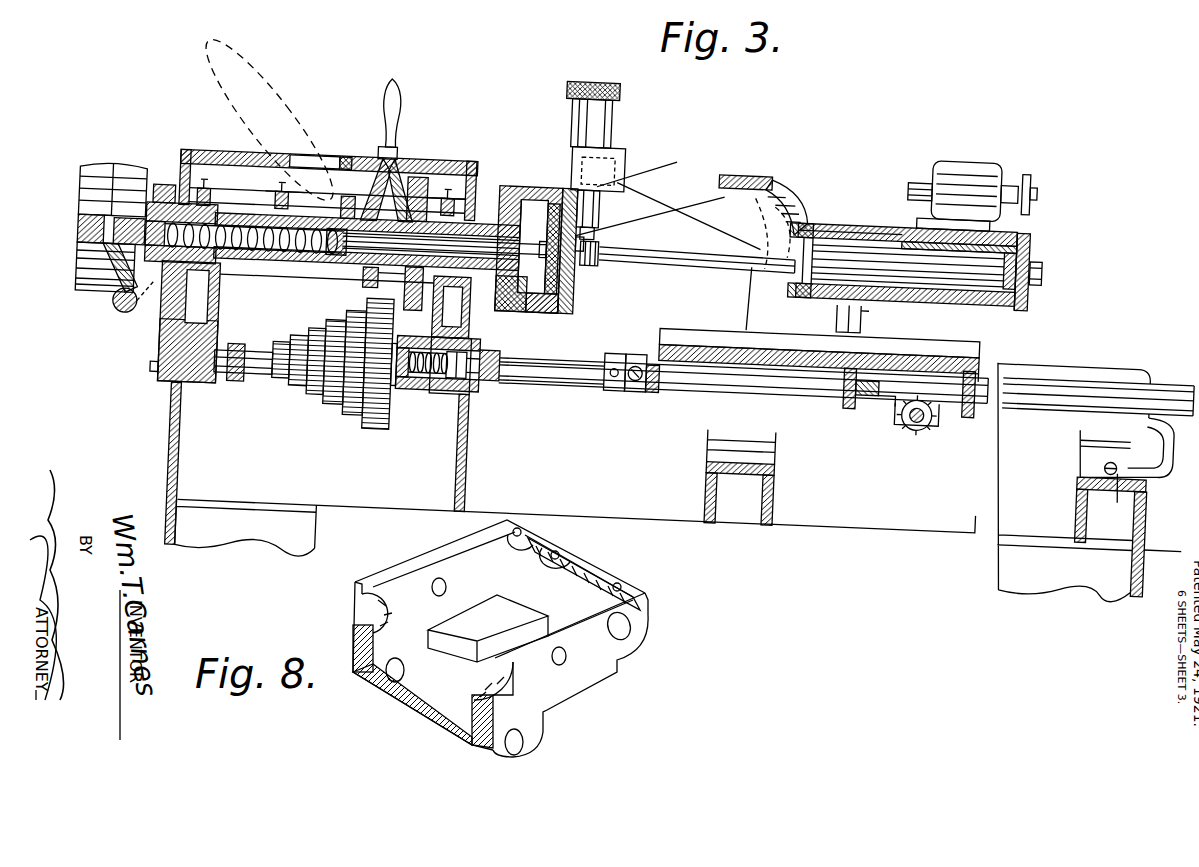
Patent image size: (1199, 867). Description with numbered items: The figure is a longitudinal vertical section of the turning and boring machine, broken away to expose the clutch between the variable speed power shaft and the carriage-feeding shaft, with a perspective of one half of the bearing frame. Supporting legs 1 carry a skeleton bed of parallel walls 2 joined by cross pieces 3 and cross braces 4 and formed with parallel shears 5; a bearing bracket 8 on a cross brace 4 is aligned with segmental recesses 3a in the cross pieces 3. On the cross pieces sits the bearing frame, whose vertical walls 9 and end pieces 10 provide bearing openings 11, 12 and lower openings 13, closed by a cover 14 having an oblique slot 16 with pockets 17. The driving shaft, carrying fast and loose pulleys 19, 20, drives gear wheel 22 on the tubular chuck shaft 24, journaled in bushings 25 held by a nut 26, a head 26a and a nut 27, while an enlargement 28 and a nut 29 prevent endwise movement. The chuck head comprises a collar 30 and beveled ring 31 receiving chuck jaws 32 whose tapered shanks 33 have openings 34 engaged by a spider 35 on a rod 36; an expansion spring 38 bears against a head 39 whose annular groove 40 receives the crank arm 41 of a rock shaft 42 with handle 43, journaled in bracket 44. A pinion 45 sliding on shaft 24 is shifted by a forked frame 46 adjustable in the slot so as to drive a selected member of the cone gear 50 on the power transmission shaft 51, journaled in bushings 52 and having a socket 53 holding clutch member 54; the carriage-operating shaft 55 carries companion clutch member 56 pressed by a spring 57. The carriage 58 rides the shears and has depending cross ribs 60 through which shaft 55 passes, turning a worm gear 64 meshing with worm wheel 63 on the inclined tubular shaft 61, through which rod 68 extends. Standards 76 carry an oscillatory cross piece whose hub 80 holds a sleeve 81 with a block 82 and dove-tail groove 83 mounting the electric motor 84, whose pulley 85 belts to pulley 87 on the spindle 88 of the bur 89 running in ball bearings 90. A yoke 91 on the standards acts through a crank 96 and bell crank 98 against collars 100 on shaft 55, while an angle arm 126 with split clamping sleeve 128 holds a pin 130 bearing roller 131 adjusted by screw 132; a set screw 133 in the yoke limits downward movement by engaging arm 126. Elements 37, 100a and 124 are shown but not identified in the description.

In FIG. 3, the supporting legs 1 is at (184, 541).
In FIG. 3, the parallel walls 2 is at (578, 486).
In FIG. 3, the cross pieces 3 is at (174, 486).
In FIG. 3, the segmental recesses 3a is at (186, 400).
In FIG. 3, the cross braces 4 is at (742, 468).
In FIG. 3, the parallel shears 5 is at (1126, 351).
In FIG. 3, the bearing bracket 8 is at (1164, 405).
In FIG. 3, the vertical walls 9 is at (160, 350).
In FIG. 8, the vertical walls 9 is at (398, 568).
In FIG. 3, the end pieces 10 is at (332, 292).
In FIG. 8, the end pieces 10 is at (572, 565).
In FIG. 3, the bearing openings 11 is at (205, 210).
In FIG. 8, the bearing openings 11 is at (358, 612).
In FIG. 8, the bearing openings 12 is at (567, 660).
In FIG. 8, the bearing openings 13 is at (390, 680).
In FIG. 3, the cover 14 is at (206, 172).
In FIG. 3, the oblique slot 16 is at (302, 172).
In FIG. 3, the pockets 17 is at (341, 172).
In FIG. 3, the fast pulley 19 is at (78, 200).
In FIG. 3, the loose pulley 20 is at (116, 192).
In FIG. 3, the gear wheel 22 is at (412, 185).
In FIG. 3, the tubular chuck shaft 24 is at (308, 247).
In FIG. 3, the bushings 25 is at (476, 229).
In FIG. 3, the nut 26 is at (432, 205).
In FIG. 3, the head 26a is at (264, 205).
In FIG. 3, the nut 27 is at (164, 203).
In FIG. 3, the enlargement 28 is at (500, 190).
In FIG. 3, the nut 29 is at (142, 221).
In FIG. 3, the collar 30 is at (516, 203).
In FIG. 3, the ring 31 is at (549, 206).
In FIG. 3, the chuck jaws 32 is at (572, 300).
In FIG. 3, the shanks 33 is at (518, 315).
In FIG. 3, the openings 34 is at (554, 315).
In FIG. 3, the spider 35 is at (578, 240).
In FIG. 3, the rod 36 is at (366, 229).
In FIG. 3, the spring 37 is at (284, 264).
In FIG. 3, the coiled expansion spring 38 is at (332, 266).
In FIG. 3, the head 39 is at (80, 246).
In FIG. 3, the annular groove 40 is at (110, 270).
In FIG. 3, the crank arm 41 is at (90, 318).
In FIG. 3, the rock shaft 42 is at (116, 330).
In FIG. 3, the handle 43 is at (302, 66).
In FIG. 3, the bearing bracket 44 is at (160, 335).
In FIG. 3, the gear pinion 45 is at (363, 292).
In FIG. 3, the forked frame 46 is at (386, 118).
In FIG. 3, the cone gear 50 is at (324, 407).
In FIG. 3, the power transmission shaft 51 is at (248, 388).
In FIG. 3, the bushings 52 is at (234, 396).
In FIG. 3, the socket 53 is at (448, 398).
In FIG. 3, the clutch member 54 is at (510, 388).
In FIG. 3, the carriage-operating shaft 55 is at (712, 388).
In FIG. 3, the clutch member 56 is at (458, 398).
In FIG. 3, the spring 57 is at (406, 398).
In FIG. 3, the carriage 58 is at (702, 342).
In FIG. 3, the cross ribs 60 is at (846, 396).
In FIG. 3, the inclined tubular shaft 61 is at (928, 418).
In FIG. 3, the worm wheel 63 is at (902, 410).
In FIG. 3, the worm gear 64 is at (888, 388).
In FIG. 3, the rod 68 is at (916, 410).
In FIG. 3, the standards 76 is at (860, 316).
In FIG. 3, the hub portion 80 is at (824, 215).
In FIG. 3, the sleeve 81 is at (866, 215).
In FIG. 3, the block 82 is at (902, 229).
In FIG. 3, the dove-tail groove 83 is at (1020, 214).
In FIG. 3, the electric motor 84 is at (966, 147).
In FIG. 3, the pulley 85 is at (1020, 157).
In FIG. 3, the pulley 87 is at (1026, 237).
In FIG. 3, the spindle 88 is at (1039, 260).
In FIG. 3, the cutting tool or bur 89 is at (614, 244).
In FIG. 3, the cased ball bearings 90 is at (1008, 285).
In FIG. 3, the yoke 91 is at (752, 170).
In FIG. 3, the crank 96 is at (770, 265).
In FIG. 3, the bell crank 98 is at (654, 392).
In FIG. 3, the collars 100 is at (612, 390).
In FIG. 3, the block 100a is at (636, 390).
In FIG. 3, the bracket 124 is at (870, 306).
In FIG. 3, the angle arm 126 is at (618, 150).
In FIG. 3, the split clamping sleeve 128 is at (603, 120).
In FIG. 3, the vertical pin 130 is at (651, 195).
In FIG. 3, the antifriction roller 131 is at (618, 216).
In FIG. 3, the screw 132 is at (610, 92).
In FIG. 3, the set screw 133 is at (780, 182).